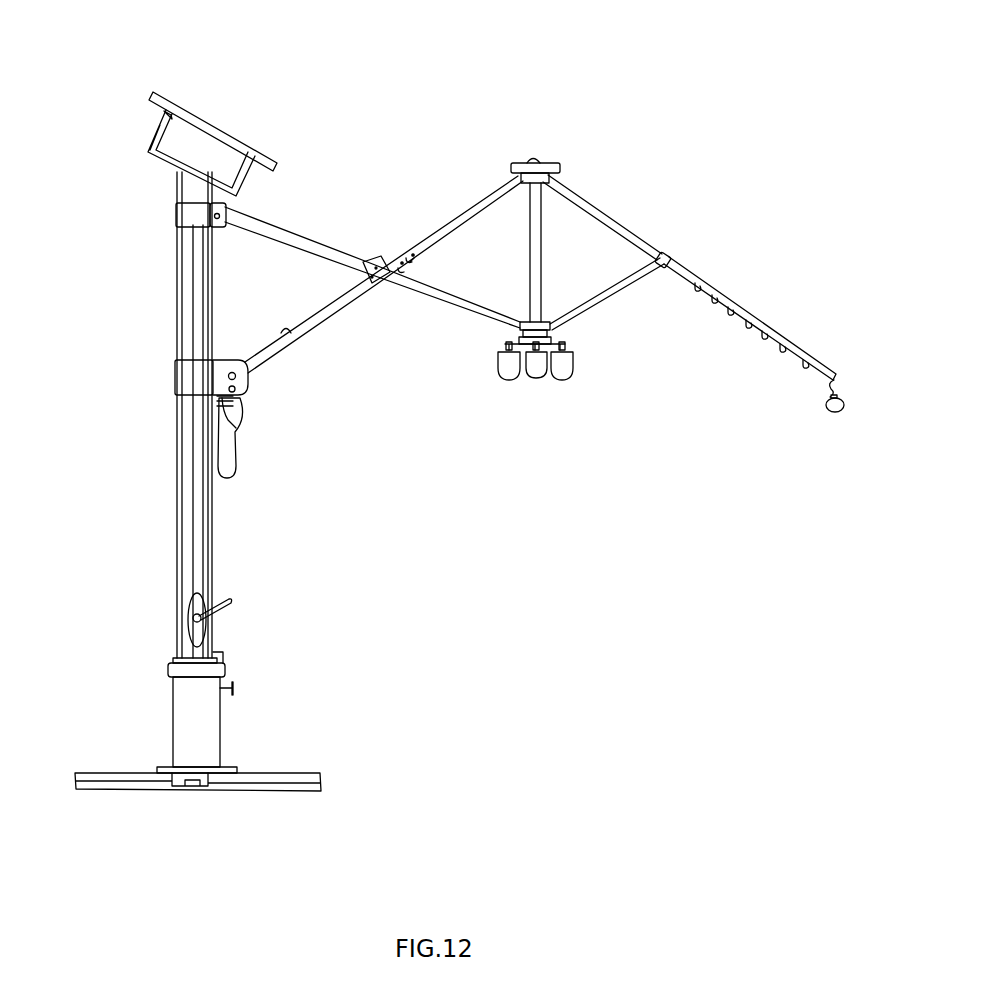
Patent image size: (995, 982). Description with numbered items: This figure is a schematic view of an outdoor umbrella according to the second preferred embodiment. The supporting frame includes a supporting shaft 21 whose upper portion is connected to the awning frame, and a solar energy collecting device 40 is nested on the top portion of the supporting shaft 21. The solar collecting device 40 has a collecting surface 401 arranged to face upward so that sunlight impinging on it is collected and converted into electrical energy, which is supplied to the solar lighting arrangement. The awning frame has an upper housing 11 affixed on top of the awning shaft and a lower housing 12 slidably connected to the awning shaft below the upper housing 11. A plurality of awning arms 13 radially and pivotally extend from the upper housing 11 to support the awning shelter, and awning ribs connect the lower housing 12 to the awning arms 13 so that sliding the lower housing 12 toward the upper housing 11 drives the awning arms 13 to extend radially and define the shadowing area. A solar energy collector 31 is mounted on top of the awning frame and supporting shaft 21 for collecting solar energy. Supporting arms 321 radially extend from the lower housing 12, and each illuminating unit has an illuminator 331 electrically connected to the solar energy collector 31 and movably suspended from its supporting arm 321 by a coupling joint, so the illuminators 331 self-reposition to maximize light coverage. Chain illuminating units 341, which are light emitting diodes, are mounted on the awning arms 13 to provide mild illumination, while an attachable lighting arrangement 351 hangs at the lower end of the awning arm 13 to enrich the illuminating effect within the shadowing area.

The solar energy collecting device 40 is at (119, 115).
The collecting surface 401 is at (225, 112).
The supporting shaft 21 is at (193, 255).
The upper housing 11 is at (517, 168).
The solar energy collector 31 is at (517, 163).
The lower housing 12 is at (528, 322).
The supporting arms 321 is at (520, 328).
The illuminator 331 is at (500, 356).
The chain illuminating units 341 is at (712, 292).
The awning arms 13 is at (800, 358).
The end hook weight 351 is at (827, 412).